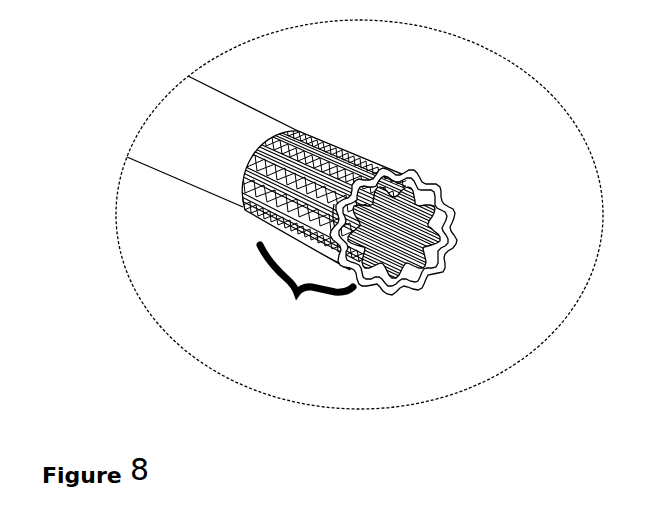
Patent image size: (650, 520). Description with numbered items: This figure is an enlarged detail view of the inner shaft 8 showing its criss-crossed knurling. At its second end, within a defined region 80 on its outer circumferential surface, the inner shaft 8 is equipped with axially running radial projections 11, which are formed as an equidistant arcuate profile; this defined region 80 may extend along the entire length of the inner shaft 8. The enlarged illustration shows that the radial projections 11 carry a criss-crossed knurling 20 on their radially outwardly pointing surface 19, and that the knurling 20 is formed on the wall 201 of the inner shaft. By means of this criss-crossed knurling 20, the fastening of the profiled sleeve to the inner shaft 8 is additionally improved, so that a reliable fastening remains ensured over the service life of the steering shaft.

The inner shaft 8 is at (217, 113).
The radial projections 11 is at (262, 163).
The radially outwardly pointing surface 19 is at (438, 193).
The criss-crossed knurling 20 is at (350, 147).
The wall 201 is at (270, 205).
The defined region 80 is at (306, 285).